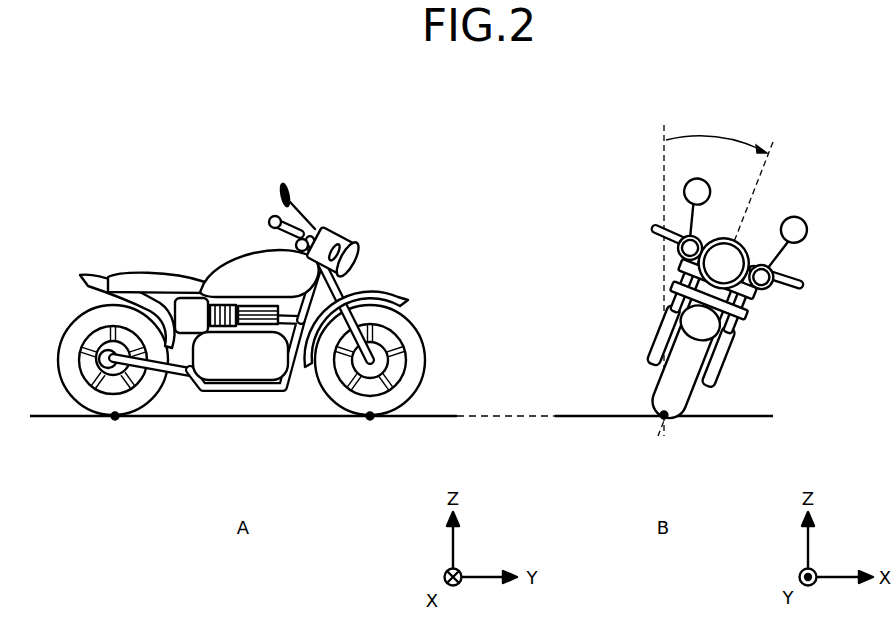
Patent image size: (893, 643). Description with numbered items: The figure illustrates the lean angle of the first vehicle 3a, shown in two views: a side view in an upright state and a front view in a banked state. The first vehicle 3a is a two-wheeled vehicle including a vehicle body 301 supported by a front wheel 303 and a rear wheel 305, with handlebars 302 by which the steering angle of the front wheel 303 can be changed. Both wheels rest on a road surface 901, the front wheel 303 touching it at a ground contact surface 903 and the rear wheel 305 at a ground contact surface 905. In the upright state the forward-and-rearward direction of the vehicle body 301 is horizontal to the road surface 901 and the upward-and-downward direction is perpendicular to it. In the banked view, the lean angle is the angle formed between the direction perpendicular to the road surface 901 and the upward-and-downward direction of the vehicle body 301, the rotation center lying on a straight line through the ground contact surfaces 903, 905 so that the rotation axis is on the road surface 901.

The first vehicle 3a is at (244, 297).
The vehicle body 301 is at (219, 262).
The handlebars 302 is at (274, 216).
The front wheel 303 is at (428, 324).
The rear wheel 305 is at (74, 323).
The road surface 901 is at (447, 414).
The ground contact surface of the front wheel 903 is at (370, 418).
The ground contact surface of the rear wheel 905 is at (115, 418).